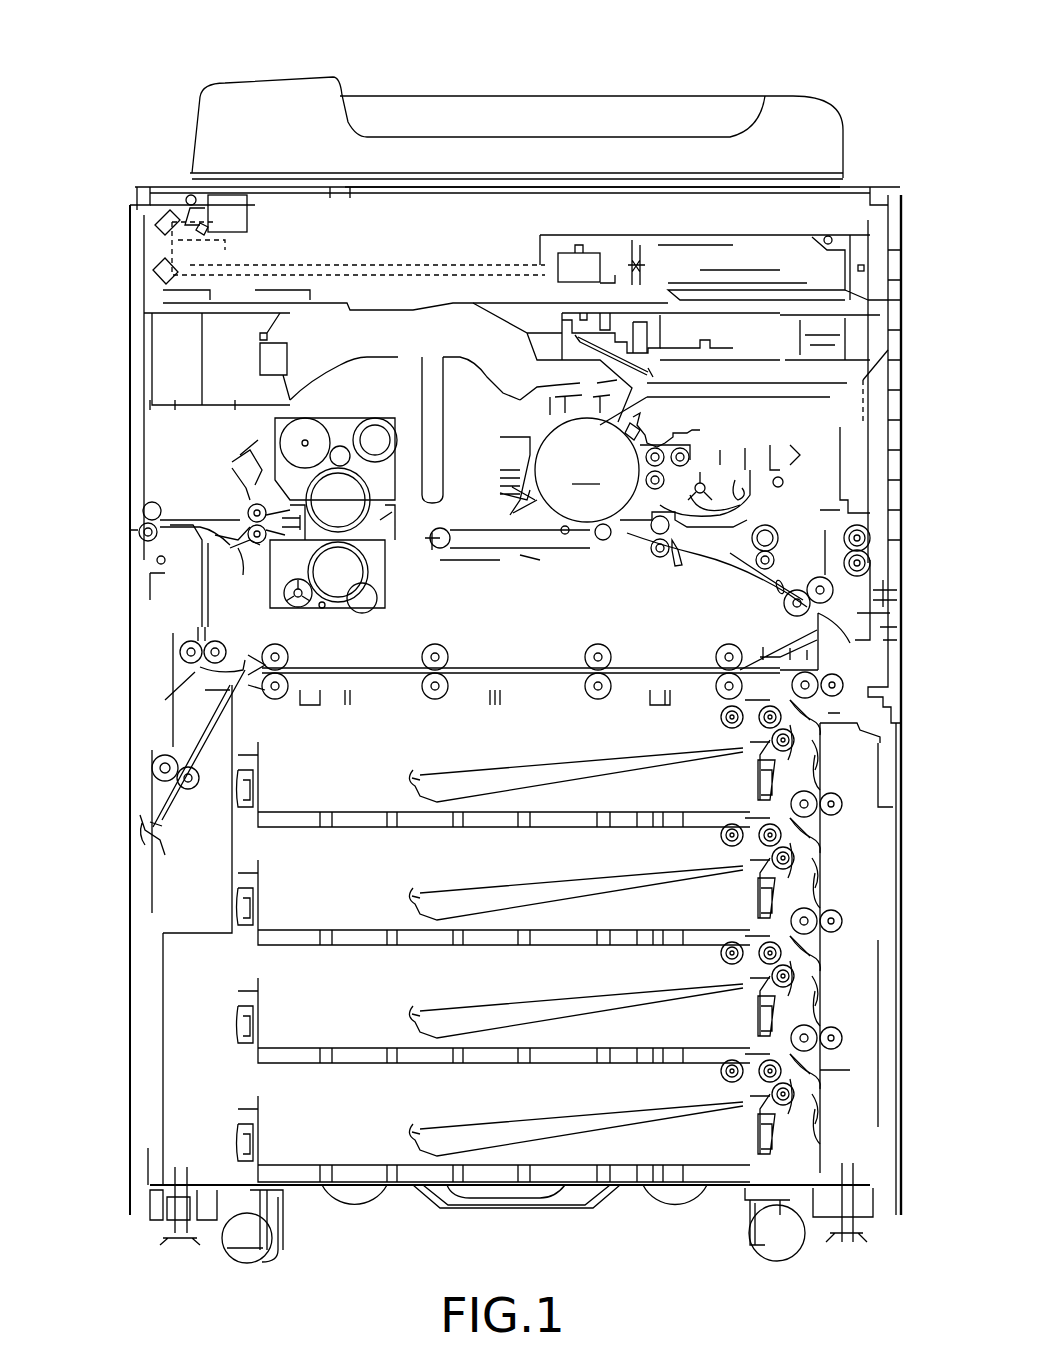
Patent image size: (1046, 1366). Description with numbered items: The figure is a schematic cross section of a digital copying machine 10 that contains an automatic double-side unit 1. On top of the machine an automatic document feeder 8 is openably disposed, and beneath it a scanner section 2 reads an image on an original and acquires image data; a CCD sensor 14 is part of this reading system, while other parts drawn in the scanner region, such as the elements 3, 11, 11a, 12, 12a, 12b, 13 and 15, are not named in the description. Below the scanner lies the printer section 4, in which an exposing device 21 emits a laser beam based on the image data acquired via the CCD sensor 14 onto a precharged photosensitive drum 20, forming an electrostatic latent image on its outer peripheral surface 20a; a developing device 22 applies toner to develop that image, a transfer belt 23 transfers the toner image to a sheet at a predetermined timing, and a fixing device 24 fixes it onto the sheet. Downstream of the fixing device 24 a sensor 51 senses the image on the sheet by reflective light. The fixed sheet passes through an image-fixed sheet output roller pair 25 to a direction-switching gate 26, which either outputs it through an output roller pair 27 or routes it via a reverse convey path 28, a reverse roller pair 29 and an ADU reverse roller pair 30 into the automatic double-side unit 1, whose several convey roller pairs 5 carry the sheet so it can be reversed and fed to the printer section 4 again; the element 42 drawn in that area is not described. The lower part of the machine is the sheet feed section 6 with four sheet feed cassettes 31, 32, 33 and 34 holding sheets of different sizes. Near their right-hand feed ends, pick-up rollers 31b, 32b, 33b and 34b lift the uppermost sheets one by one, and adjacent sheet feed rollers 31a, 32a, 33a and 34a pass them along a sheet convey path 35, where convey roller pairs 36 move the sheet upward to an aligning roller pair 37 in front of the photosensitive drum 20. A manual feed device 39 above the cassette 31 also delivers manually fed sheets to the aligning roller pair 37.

The automatic double-side unit 1 is at (502, 660).
The scanner section 2 is at (800, 210).
The document table 3 is at (703, 185).
The printer section 4 is at (793, 410).
The convey roller pairs 5 is at (438, 645).
The sheet feed section 6 is at (98, 800).
The automatic document feeder 8 is at (647, 107).
The digital copying machine 10 is at (852, 82).
The carriage 11 is at (247, 213).
The light source 11a is at (212, 228).
The second carriage 12 is at (150, 250).
The mirror 12a is at (155, 225).
The mirror 12b is at (156, 280).
The CCD sensor 13 is at (575, 253).
The CCD sensor 14 is at (645, 267).
The lamp 15 is at (191, 195).
The photosensitive drum 20 is at (623, 460).
The outer peripheral surface 20a is at (640, 420).
The exposing device 21 is at (752, 325).
The developing device 22 is at (715, 465).
The transfer belt 23 is at (453, 525).
The fixing device 24 is at (365, 418).
The image-fixed sheet output roller pair 25 is at (258, 545).
The direction-switching gate 26 is at (206, 525).
The output roller pair 27 is at (138, 532).
The reverse convey path 28 is at (200, 625).
The reverse roller pair 29 is at (190, 652).
The ADU reverse roller pair 30 is at (190, 790).
The sheet feed cassette 31 is at (325, 797).
The sheet feed roller 31a is at (750, 760).
The pick-up roller 31b is at (720, 718).
The sheet feed cassette 32 is at (325, 915).
The sheet feed roller 32a is at (750, 878).
The pick-up roller 32b is at (720, 836).
The sheet feed cassette 33 is at (325, 1033).
The sheet feed roller 33a is at (750, 996).
The pick-up roller 33b is at (720, 954).
The sheet feed cassette 34 is at (325, 1151).
The sheet feed roller 34a is at (750, 1114).
The pick-up roller 34b is at (720, 1072).
The sheet convey path 35 is at (828, 866).
The convey roller pairs 36 is at (842, 688).
The aligning roller pair 37 is at (660, 558).
The manual feed device 39 is at (857, 620).
The duplex path 42 is at (180, 680).
The sensor 51 is at (242, 500).